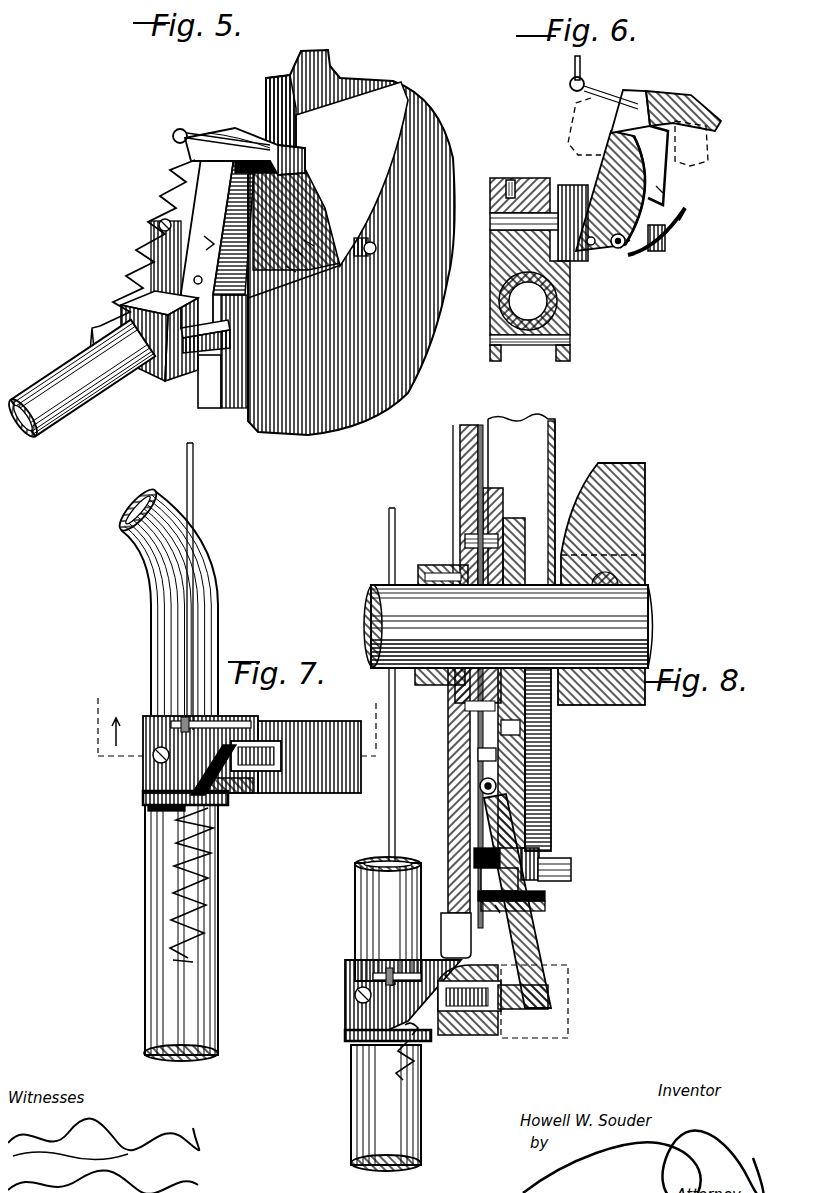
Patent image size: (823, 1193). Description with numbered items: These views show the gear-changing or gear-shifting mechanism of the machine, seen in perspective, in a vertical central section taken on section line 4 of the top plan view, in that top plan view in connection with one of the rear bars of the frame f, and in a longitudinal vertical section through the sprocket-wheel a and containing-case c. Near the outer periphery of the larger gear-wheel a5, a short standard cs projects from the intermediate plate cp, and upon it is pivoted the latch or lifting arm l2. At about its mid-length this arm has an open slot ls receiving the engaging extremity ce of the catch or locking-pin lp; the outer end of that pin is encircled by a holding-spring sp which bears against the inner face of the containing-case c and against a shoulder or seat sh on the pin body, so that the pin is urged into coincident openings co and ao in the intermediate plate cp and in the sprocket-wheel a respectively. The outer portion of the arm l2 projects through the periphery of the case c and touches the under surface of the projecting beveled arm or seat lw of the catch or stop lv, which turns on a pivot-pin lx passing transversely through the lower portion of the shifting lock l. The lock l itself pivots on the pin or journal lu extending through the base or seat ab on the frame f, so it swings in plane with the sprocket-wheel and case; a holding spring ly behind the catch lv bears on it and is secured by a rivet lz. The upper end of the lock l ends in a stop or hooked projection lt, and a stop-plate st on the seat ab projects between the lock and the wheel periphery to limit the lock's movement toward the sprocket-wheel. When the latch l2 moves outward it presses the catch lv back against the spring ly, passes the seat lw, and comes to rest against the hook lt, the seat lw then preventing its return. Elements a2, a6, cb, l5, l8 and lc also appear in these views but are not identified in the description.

In FIG. 5, the sprocket-wheel a is at (258, 88).
In FIG. 8, the sprocket-wheel a is at (455, 435).
In FIG. 8, the shaft a2 is at (508, 626).
In FIG. 8, the larger gear-wheel a5 is at (490, 748).
In FIG. 8, the opening a6 is at (515, 718).
In FIG. 5, the base or seat ab is at (147, 366).
In FIG. 6, the base or seat ab is at (482, 290).
In FIG. 7, the base or seat ab is at (135, 792).
In FIG. 8, the base or seat ab is at (425, 1031).
In FIG. 8, the opening in the sprocket-wheel ao is at (446, 860).
In FIG. 5, the containing-case c is at (345, 242).
In FIG. 8, the containing-case c is at (547, 470).
In FIG. 8, the bolt cb is at (438, 560).
In FIG. 8, the engaging extremity of the locking-pin ce is at (496, 869).
In FIG. 8, the opening in the intermediate plate co is at (445, 845).
In FIG. 8, the intermediate plate cp is at (472, 420).
In FIG. 8, the short standard cs is at (541, 786).
In FIG. 5, the frame f is at (81, 380).
In FIG. 6, the frame f is at (528, 301).
In FIG. 7, the frame f is at (166, 772).
In FIG. 8, the frame f is at (386, 1014).
In FIG. 5, the shifting lock l is at (212, 223).
In FIG. 6, the shifting lock l is at (597, 172).
In FIG. 8, the shifting lock l is at (470, 960).
In FIG. 5, the latch or lifting arm l2 is at (283, 260).
In FIG. 6, the latch or lifting arm l2 is at (657, 225).
In FIG. 8, the latch or lifting arm l2 is at (520, 912).
In FIG. 5, the rod l5 is at (226, 124).
In FIG. 6, the rod l5 is at (580, 58).
In FIG. 7, the rod l5 is at (187, 490).
In FIG. 8, the rod l5 is at (381, 812).
In FIG. 5, the spring l8 is at (150, 213).
In FIG. 7, the spring l8 is at (206, 865).
In FIG. 8, the spring l8 is at (405, 1047).
In FIG. 5, the cam lc is at (290, 243).
In FIG. 5, the catch or locking-pin lp is at (368, 240).
In FIG. 8, the catch or locking-pin lp is at (563, 862).
In FIG. 8, the open slot ls is at (488, 900).
In FIG. 5, the stop or hooked projection lt is at (245, 151).
In FIG. 6, the stop or hooked projection lt is at (687, 120).
In FIG. 7, the stop or hooked projection lt is at (345, 718).
In FIG. 6, the pin or journal lu is at (486, 212).
In FIG. 5, the catch or stop lv is at (170, 183).
In FIG. 6, the catch or stop lv is at (656, 185).
In FIG. 7, the catch or stop lv is at (262, 733).
In FIG. 8, the catch or stop lv is at (510, 1003).
In FIG. 5, the projecting beveled arm or seat lw is at (196, 233).
In FIG. 6, the projecting beveled arm or seat lw is at (672, 205).
In FIG. 8, the projecting beveled arm or seat lw is at (540, 1000).
In FIG. 5, the pivot-pin lx is at (186, 272).
In FIG. 6, the pivot-pin lx is at (617, 240).
In FIG. 8, the pivot-pin lx is at (480, 1005).
In FIG. 6, the holding spring ly is at (611, 242).
In FIG. 6, the rivet lz is at (585, 240).
In FIG. 7, the rivet lz is at (238, 793).
In FIG. 8, the rivet lz is at (452, 1032).
In FIG. 5, the shoulder or seat sh is at (300, 235).
In FIG. 8, the shoulder or seat sh is at (538, 893).
In FIG. 8, the holding-spring sp is at (533, 853).
In FIG. 5, the stop-plate st is at (143, 229).
In FIG. 6, the stop-plate st is at (545, 170).
In FIG. 7, the stop-plate st is at (250, 716).
In FIG. 8, the stop-plate st is at (403, 995).
In FIG. 7, the section line 4 is at (234, 732).